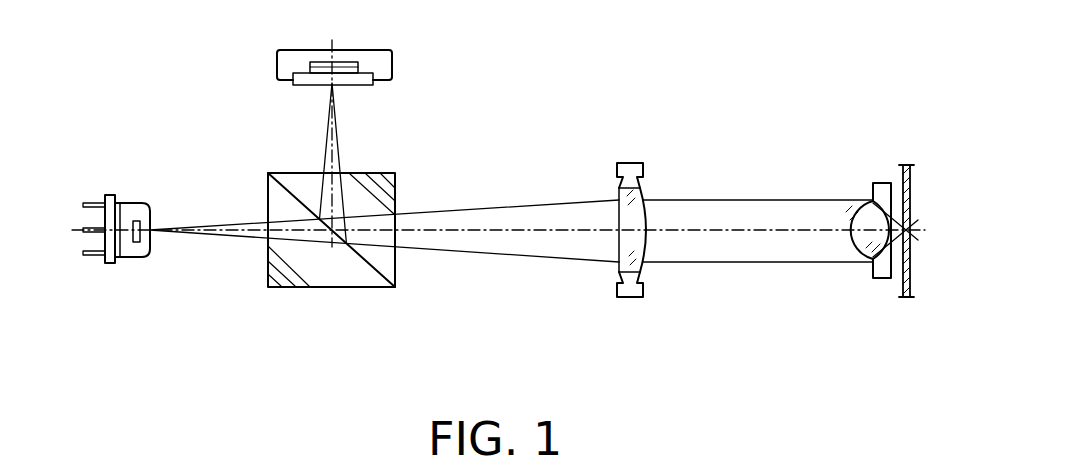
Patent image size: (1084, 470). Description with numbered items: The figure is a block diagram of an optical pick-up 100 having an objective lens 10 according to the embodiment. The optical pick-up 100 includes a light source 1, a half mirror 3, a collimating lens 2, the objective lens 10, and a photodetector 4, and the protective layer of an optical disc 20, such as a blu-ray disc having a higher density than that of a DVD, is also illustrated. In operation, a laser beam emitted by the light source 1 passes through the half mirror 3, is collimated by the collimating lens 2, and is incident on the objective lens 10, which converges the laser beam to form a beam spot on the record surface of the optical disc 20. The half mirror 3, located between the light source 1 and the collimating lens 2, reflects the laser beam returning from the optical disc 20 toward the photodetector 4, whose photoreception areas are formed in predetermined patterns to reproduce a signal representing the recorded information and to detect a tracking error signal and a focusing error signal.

The light source 1 is at (136, 252).
The collimating lens 2 is at (630, 297).
The half mirror 3 is at (322, 275).
The photodetector 4 is at (382, 66).
The objective lens 10 is at (880, 273).
The optical disc 20 is at (903, 172).
The optical pick-up 100 is at (614, 91).